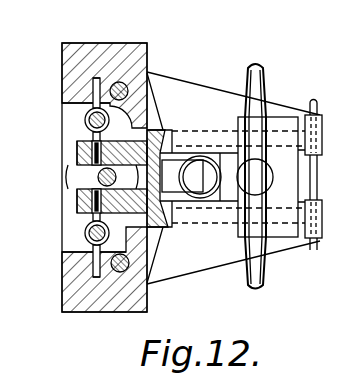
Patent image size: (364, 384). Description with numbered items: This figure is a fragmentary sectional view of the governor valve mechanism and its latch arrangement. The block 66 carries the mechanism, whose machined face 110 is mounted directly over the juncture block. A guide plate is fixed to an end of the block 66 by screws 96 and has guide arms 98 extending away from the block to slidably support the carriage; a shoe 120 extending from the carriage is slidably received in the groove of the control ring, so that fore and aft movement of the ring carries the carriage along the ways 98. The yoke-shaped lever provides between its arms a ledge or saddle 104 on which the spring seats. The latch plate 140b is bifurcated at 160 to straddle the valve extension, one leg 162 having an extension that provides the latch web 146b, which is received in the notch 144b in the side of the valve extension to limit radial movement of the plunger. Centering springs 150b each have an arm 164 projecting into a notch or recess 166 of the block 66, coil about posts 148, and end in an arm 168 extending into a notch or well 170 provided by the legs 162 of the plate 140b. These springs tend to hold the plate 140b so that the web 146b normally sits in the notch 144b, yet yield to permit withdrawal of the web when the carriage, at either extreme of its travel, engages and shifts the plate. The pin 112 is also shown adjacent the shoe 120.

The block 66 is at (108, 43).
The notch or recess 166 is at (95, 80).
The arm 164 is at (93, 100).
The centering springs 150b is at (88, 114).
The posts 148 is at (85, 121).
The arm 168 is at (86, 150).
The notch or well 170 is at (77, 160).
The notch 144b is at (100, 178).
The latch element or web 146b is at (80, 191).
The leg 162 is at (77, 205).
The machined face 110 is at (67, 298).
The screws 96 is at (147, 73).
The guide arms 98 is at (192, 90).
The bifurcation 160 is at (167, 130).
The ledge or saddle 104 is at (187, 170).
The shoe 120 is at (256, 101).
The pin 112 is at (309, 194).
The plate 140b is at (158, 232).